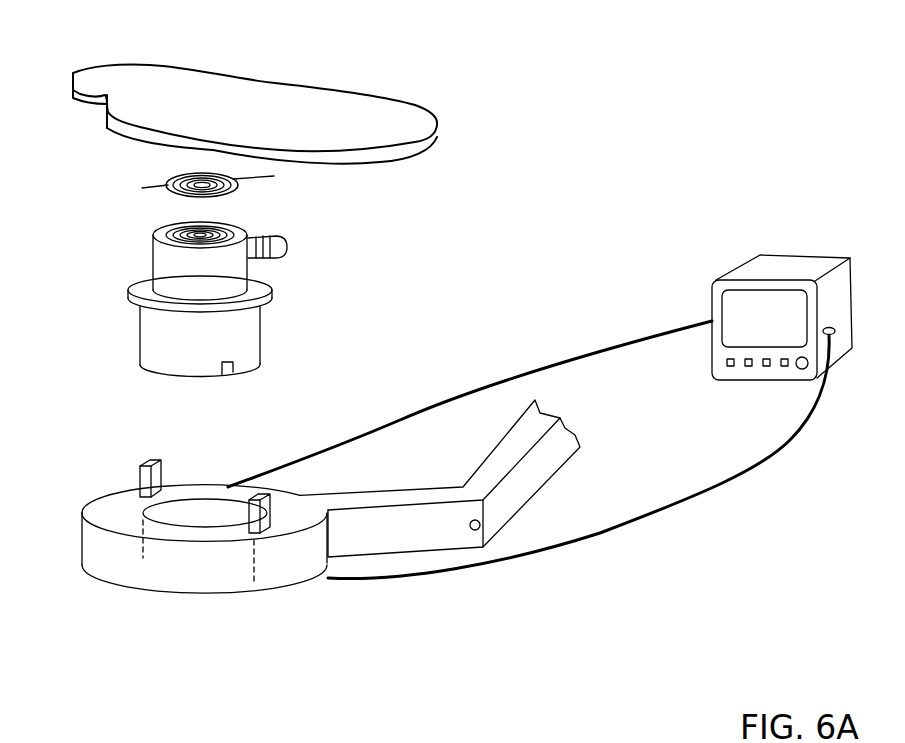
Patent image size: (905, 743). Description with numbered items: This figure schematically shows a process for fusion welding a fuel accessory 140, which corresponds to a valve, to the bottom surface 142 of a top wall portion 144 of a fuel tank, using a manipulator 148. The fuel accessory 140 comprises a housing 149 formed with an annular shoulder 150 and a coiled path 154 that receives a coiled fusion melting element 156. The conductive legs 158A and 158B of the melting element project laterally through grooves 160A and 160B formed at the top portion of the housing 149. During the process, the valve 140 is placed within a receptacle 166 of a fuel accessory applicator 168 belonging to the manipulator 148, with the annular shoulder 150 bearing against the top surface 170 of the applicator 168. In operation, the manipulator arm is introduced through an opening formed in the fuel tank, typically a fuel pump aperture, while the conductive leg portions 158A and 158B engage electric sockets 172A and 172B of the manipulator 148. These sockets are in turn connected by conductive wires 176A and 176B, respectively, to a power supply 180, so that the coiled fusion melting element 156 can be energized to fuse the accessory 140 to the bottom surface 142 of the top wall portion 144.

The fuel accessory 140 is at (198, 295).
The bottom surface 142 is at (295, 120).
The top wall portion 144 is at (403, 122).
The manipulator 148 is at (474, 580).
The sensor housing cap 149 is at (158, 262).
The annular shoulder 150 is at (268, 296).
The coiled path 154 is at (195, 148).
The coiled fusion melting element 156 is at (237, 190).
The conductive leg 158A is at (142, 188).
The conductive leg 158B is at (274, 176).
The groove 160A is at (158, 243).
The groove 160B is at (230, 228).
The receptacle 166 is at (190, 507).
The fuel accessory applicator 168 is at (168, 571).
The top surface 170 is at (118, 513).
The electric socket 172A is at (143, 472).
The electric socket 172B is at (272, 517).
The conductive wire 176A is at (607, 355).
The conductive wire 176B is at (677, 503).
The power supply 180 is at (780, 272).